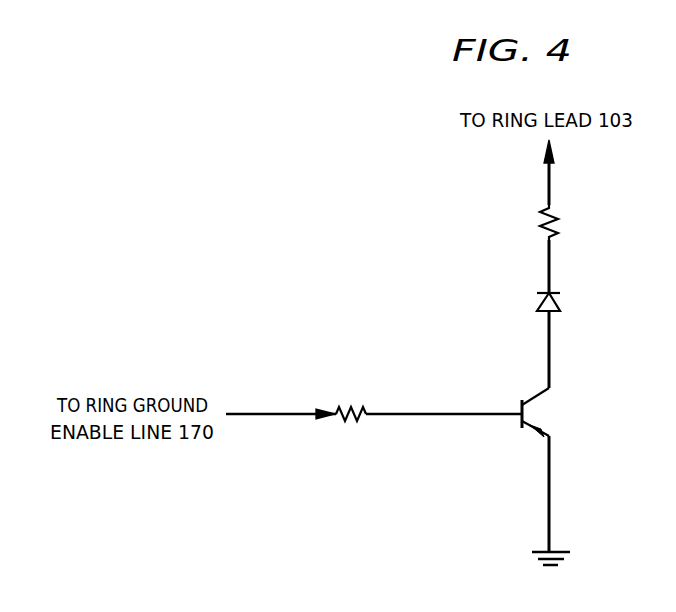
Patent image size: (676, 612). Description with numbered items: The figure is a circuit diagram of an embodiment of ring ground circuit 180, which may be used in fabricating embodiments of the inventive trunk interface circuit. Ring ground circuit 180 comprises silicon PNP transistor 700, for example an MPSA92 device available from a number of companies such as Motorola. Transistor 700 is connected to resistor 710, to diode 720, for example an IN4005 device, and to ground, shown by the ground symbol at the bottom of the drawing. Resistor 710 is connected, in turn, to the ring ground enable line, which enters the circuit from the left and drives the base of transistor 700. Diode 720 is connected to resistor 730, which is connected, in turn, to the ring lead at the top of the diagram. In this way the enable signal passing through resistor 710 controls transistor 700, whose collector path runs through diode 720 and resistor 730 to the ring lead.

The ring ground circuit 180 is at (363, 122).
The silicon PNP transistor 700 is at (521, 416).
The resistor 710 is at (347, 410).
The diode 720 is at (537, 305).
The resistor 730 is at (556, 216).